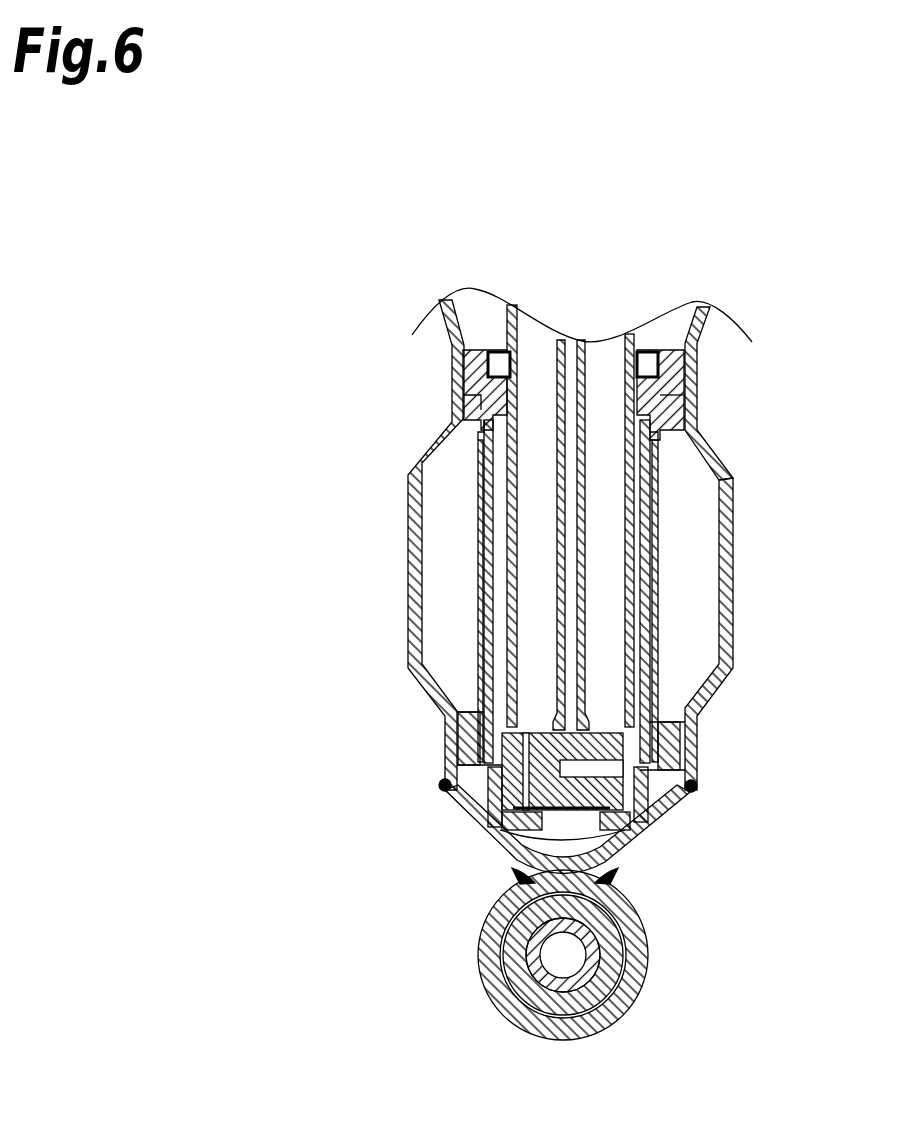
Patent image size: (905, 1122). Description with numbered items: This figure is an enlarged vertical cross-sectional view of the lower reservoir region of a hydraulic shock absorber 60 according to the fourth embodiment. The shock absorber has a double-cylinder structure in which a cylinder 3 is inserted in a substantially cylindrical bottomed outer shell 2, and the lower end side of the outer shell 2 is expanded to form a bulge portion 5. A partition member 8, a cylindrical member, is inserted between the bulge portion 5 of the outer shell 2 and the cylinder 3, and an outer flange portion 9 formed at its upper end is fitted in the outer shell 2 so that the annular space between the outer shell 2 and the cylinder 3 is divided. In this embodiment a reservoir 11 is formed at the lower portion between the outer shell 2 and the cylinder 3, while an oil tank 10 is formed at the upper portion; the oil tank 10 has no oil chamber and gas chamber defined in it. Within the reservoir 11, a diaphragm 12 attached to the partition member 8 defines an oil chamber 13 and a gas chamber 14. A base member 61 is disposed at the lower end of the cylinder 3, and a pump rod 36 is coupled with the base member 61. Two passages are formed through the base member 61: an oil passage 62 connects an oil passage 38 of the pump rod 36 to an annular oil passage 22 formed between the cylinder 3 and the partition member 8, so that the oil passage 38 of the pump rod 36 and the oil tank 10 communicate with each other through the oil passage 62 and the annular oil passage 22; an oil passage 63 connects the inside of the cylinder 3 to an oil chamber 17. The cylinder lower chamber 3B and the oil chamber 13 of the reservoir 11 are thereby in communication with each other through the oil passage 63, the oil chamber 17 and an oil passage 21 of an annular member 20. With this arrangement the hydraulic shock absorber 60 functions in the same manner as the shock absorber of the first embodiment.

The hydraulic shock absorber 60 is at (702, 274).
The reservoir 11 is at (748, 585).
The oil tank 10 is at (705, 338).
The bulge portion 5 is at (407, 605).
The gas chamber 14 is at (437, 503).
The partition member 8 is at (492, 548).
The annular oil passage 22 is at (652, 647).
The diaphragm 12 is at (657, 552).
The oil chamber 13 is at (477, 485).
The cylinder 3 is at (642, 343).
The pump rod 36 is at (588, 507).
The oil passage 38 is at (572, 482).
The cylinder lower chamber 3B is at (537, 332).
The outer flange portion 9 is at (485, 384).
The outer shell 2 is at (697, 405).
The annular member 20 is at (447, 725).
The oil passage 21 is at (690, 755).
The oil passage 63 is at (535, 830).
The base member 61 is at (650, 822).
The oil passage 62 is at (625, 865).
The oil chamber 17 is at (487, 862).